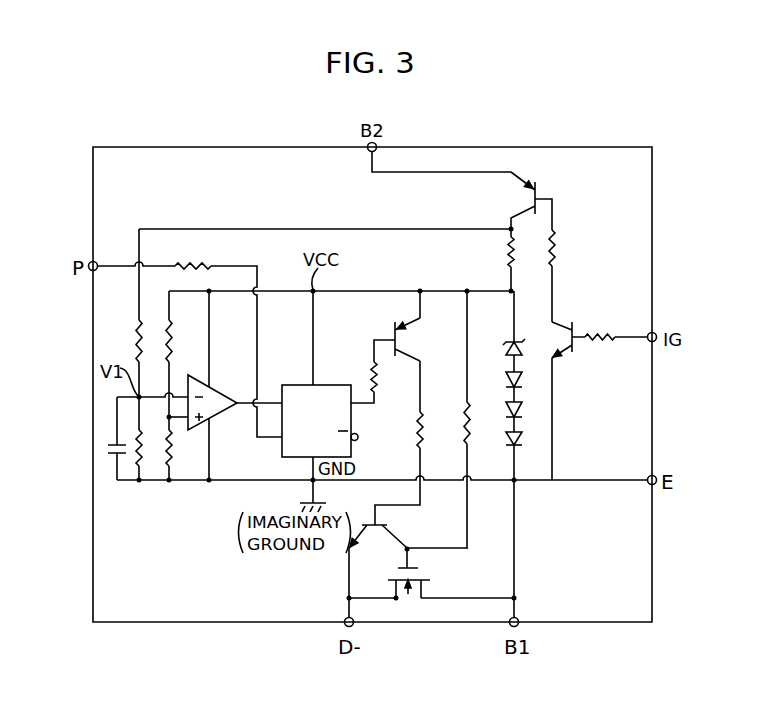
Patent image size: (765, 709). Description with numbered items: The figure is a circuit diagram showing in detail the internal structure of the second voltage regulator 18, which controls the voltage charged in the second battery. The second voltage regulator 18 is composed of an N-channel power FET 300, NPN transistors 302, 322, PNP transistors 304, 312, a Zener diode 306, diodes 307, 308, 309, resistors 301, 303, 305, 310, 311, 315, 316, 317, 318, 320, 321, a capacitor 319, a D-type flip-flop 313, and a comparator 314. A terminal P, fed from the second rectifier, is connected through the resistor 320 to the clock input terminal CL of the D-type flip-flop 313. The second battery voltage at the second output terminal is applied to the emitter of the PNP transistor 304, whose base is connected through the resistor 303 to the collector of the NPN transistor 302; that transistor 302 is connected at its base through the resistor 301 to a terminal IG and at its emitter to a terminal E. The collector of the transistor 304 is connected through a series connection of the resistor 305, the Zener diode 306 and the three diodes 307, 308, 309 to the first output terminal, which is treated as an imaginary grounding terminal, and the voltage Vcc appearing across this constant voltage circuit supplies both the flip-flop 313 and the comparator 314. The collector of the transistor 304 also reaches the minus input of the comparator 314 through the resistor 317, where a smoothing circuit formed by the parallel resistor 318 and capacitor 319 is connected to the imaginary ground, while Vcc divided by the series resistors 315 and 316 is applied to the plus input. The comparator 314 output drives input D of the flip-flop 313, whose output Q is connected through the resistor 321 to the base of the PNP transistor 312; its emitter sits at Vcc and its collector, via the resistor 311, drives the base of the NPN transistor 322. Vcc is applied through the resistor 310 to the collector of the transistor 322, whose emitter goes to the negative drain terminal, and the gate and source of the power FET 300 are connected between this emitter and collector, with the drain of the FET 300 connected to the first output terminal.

The second voltage regulator 18 is at (590, 623).
The N-channel power FET 300 is at (430, 580).
The resistor 301 is at (600, 340).
The NPN transistor 302 is at (560, 360).
The resistor 303 is at (558, 240).
The PNP transistor 304 is at (528, 197).
The resistor 305 is at (508, 260).
The Zener diode 306 is at (507, 348).
The diode 307 is at (505, 383).
The diode 308 is at (521, 410).
The diode 309 is at (521, 440).
The resistor 310 is at (468, 428).
The resistor 311 is at (423, 428).
The PNP transistor 312 is at (403, 338).
The D-type flip-flop 313 is at (357, 440).
The comparator 314 is at (228, 412).
The resistor 315 is at (172, 332).
The resistor 316 is at (177, 453).
The resistor 317 is at (140, 333).
The resistor 318 is at (147, 453).
The capacitor 319 is at (110, 452).
The resistor 320 is at (199, 263).
The resistor 321 is at (372, 372).
The NPN transistor 322 is at (390, 528).